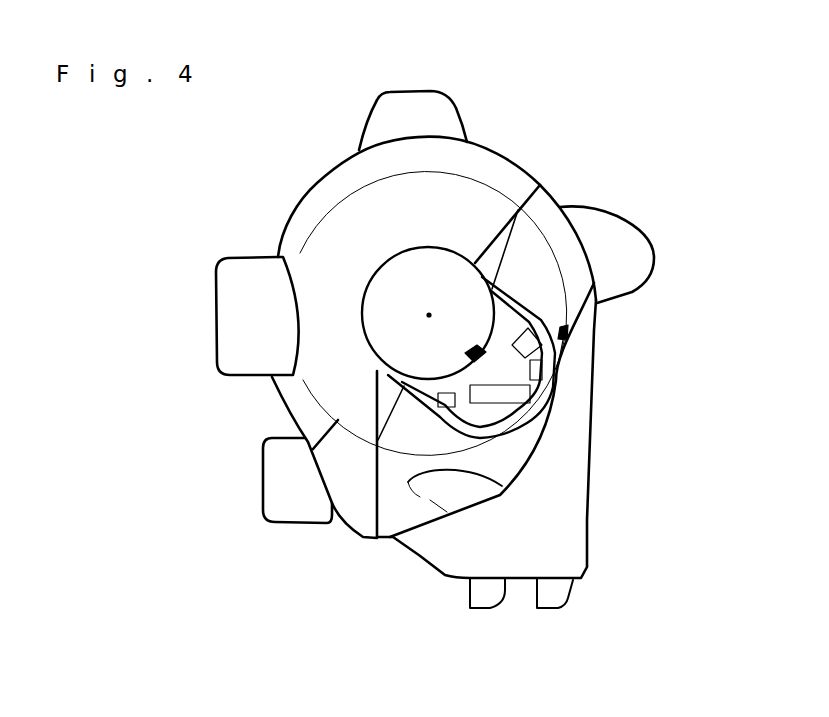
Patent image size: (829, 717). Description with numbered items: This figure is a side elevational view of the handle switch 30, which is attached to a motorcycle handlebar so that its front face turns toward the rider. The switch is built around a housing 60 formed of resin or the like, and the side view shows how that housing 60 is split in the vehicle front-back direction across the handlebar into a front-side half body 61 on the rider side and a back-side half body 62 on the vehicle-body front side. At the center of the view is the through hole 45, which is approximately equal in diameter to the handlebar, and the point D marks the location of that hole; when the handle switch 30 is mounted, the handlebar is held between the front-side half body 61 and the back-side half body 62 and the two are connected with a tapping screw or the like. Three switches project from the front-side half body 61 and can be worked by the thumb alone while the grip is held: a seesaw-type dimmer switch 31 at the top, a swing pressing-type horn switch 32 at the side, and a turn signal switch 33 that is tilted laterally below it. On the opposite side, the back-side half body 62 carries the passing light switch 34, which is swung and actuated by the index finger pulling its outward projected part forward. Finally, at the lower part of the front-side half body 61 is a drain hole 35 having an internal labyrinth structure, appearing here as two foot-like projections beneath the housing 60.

The handle switch 30 is at (530, 76).
The dimmer switch 31 is at (416, 96).
The horn switch 32 is at (226, 318).
The turn signal switch 33 is at (270, 480).
The passing light switch 34 is at (632, 245).
The drain hole 35 is at (487, 594).
The through hole 45 is at (393, 290).
The center point D is at (427, 314).
The housing 60 is at (579, 91).
The front-side half body 61 is at (513, 170).
The back-side half body 62 is at (543, 210).